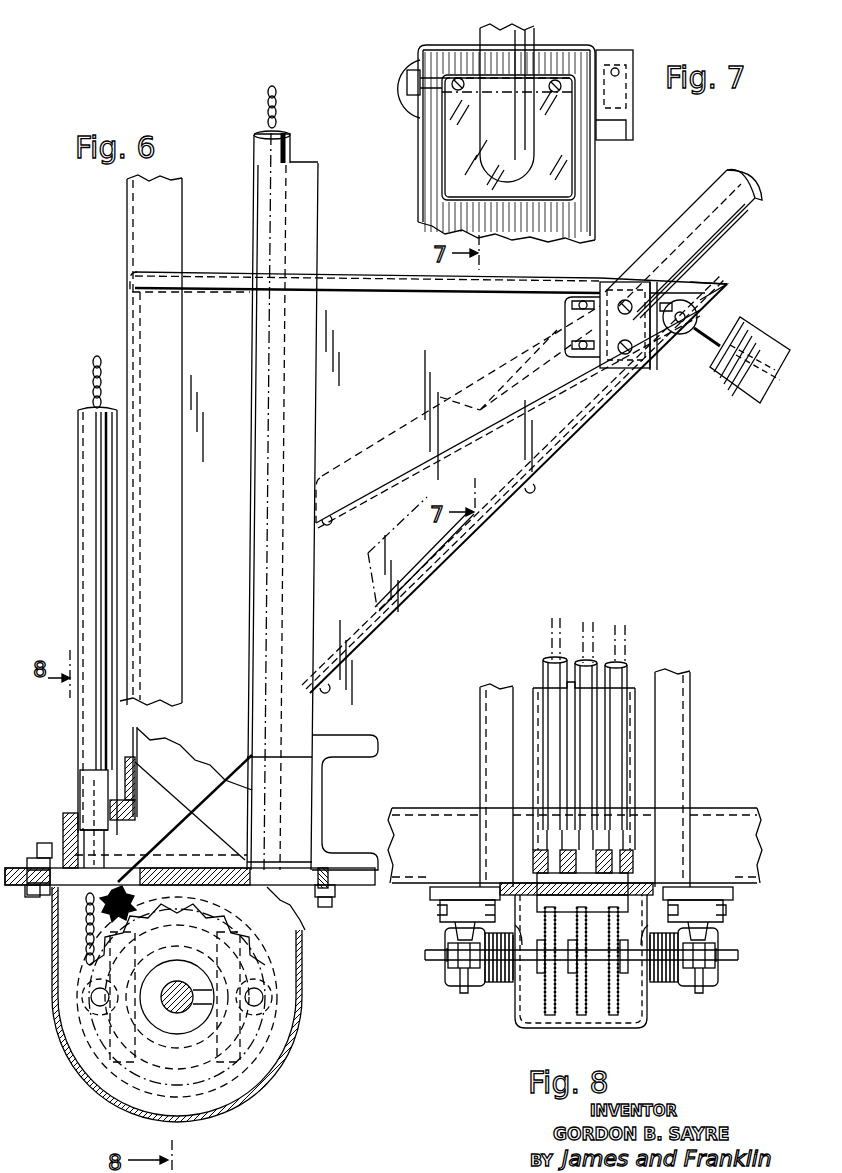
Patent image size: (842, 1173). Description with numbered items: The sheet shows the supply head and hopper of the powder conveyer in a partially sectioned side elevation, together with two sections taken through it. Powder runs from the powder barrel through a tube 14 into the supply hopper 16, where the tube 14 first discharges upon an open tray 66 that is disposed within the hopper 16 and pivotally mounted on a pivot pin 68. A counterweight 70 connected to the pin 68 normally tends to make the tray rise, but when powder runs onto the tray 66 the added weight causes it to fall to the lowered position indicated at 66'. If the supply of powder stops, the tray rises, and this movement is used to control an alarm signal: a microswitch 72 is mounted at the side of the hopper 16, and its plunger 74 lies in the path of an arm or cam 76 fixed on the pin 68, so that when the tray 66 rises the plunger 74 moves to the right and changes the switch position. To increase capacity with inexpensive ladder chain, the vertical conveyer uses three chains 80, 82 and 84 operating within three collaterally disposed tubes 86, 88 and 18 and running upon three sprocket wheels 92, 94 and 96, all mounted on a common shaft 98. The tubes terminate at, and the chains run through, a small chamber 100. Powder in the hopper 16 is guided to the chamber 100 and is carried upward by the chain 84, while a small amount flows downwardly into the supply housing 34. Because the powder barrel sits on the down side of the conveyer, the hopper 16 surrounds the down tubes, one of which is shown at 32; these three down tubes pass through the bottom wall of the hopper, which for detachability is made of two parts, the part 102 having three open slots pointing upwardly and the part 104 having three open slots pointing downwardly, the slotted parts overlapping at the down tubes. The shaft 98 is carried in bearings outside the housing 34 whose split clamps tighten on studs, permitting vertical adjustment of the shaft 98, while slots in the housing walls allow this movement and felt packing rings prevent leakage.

In FIG. 6, the tube 14 is at (712, 190).
In FIG. 7, the tube 14 is at (534, 36).
In FIG. 6, the supply hopper 16 is at (590, 400).
In FIG. 6, the tube 18 is at (78, 735).
In FIG. 8, the tube 18 is at (628, 672).
In FIG. 6, the down tube 32 is at (292, 150).
In FIG. 6, the supply housing 34 is at (300, 1013).
In FIG. 8, the supply housing 34 is at (522, 1026).
In FIG. 6, the open tray 66 is at (365, 486).
In FIG. 7, the open tray 66 is at (523, 144).
In FIG. 6, the lowered position of tray 66' is at (425, 554).
In FIG. 6, the pivot pin 68 is at (676, 340).
In FIG. 7, the pivot pin 68 is at (594, 62).
In FIG. 6, the counterweight 70 is at (754, 340).
In FIG. 7, the counterweight 70 is at (405, 68).
In FIG. 6, the microswitch 72 is at (632, 298).
In FIG. 7, the microswitch 72 is at (634, 110).
In FIG. 6, the plunger 74 is at (672, 300).
In FIG. 6, the arm or cam 76 is at (700, 288).
In FIG. 8, the chain 80 is at (553, 618).
In FIG. 8, the chain 82 is at (593, 620).
In FIG. 6, the chain 84 is at (90, 785).
In FIG. 8, the chain 84 is at (627, 625).
In FIG. 8, the tube 86 is at (545, 668).
In FIG. 8, the tube 88 is at (590, 668).
In FIG. 8, the sprocket wheel 92 is at (550, 1015).
In FIG. 8, the sprocket wheel 94 is at (582, 1016).
In FIG. 8, the sprocket wheel 96 is at (613, 1015).
In FIG. 6, the sprocket wheel shaft 98 is at (182, 1014).
In FIG. 8, the sprocket wheel shaft 98 is at (740, 955).
In FIG. 6, the chamber 100 is at (80, 865).
In FIG. 8, the chamber 100 is at (608, 890).
In FIG. 6, the bottom wall part 102 is at (250, 770).
In FIG. 6, the bottom wall part 104 is at (397, 617).